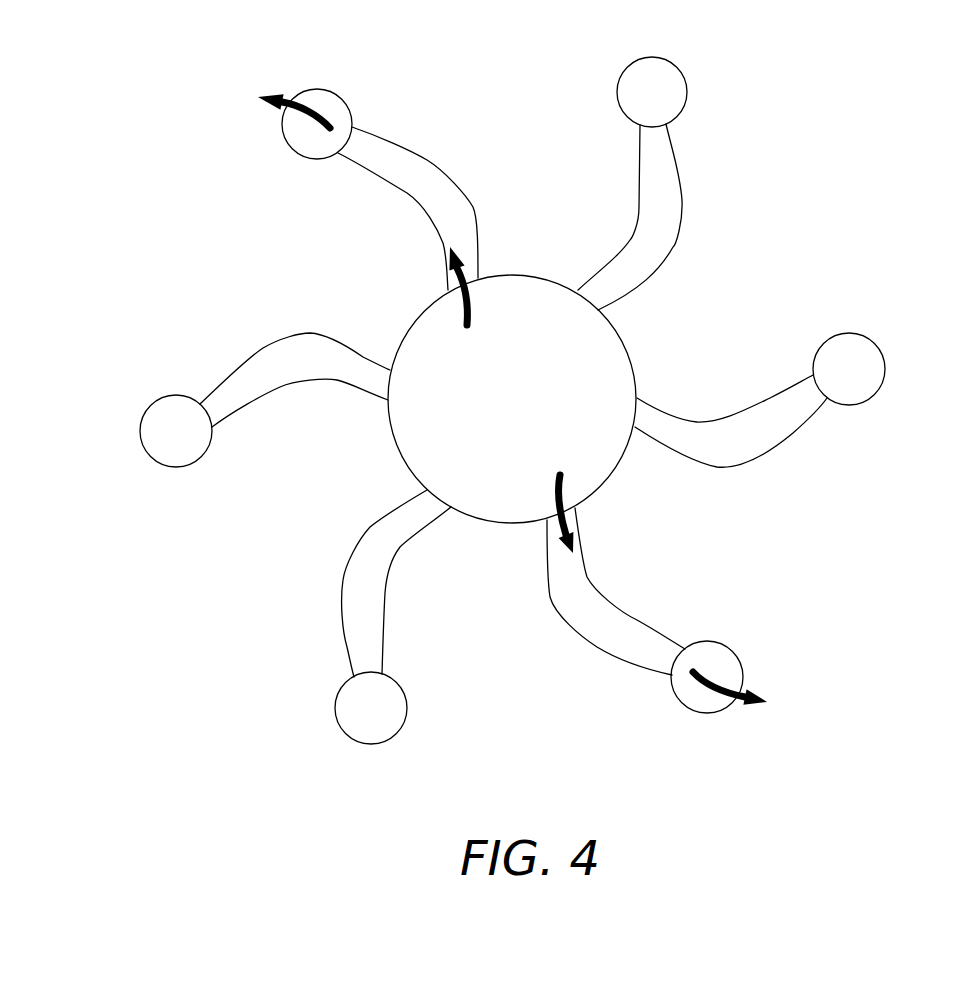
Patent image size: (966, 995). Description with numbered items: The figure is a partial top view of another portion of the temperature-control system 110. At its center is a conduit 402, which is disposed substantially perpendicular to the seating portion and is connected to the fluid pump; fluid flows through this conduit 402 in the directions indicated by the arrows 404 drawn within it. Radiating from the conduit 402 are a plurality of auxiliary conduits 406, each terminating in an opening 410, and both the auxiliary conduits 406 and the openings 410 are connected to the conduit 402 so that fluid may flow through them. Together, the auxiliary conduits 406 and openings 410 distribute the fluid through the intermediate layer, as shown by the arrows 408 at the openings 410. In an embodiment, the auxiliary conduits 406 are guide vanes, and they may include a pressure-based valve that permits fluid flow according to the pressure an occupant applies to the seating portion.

The system 110 is at (858, 118).
The conduit 402 is at (621, 333).
The arrows 404 is at (474, 305).
The auxiliary conduits 406 is at (425, 158).
The arrows 408 is at (322, 112).
The openings 410 is at (290, 148).